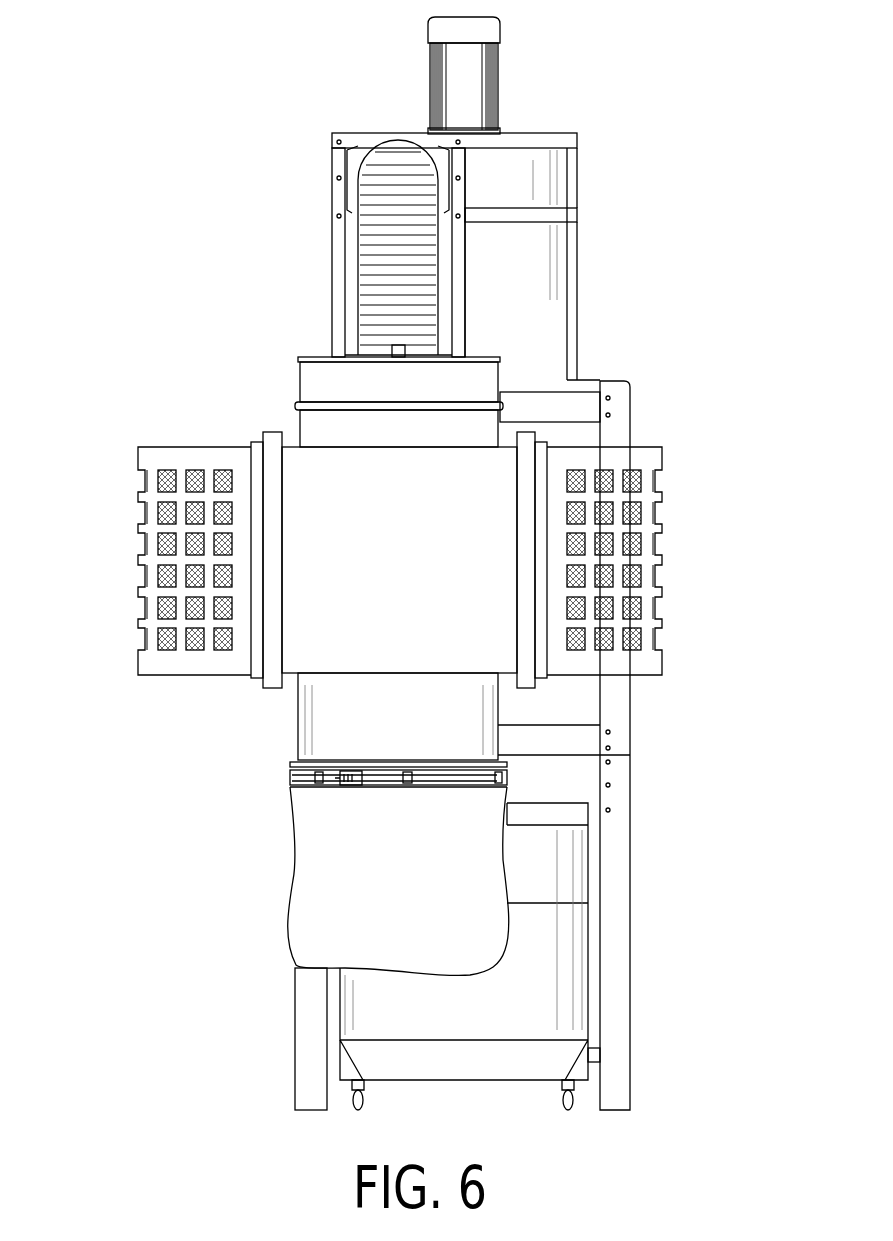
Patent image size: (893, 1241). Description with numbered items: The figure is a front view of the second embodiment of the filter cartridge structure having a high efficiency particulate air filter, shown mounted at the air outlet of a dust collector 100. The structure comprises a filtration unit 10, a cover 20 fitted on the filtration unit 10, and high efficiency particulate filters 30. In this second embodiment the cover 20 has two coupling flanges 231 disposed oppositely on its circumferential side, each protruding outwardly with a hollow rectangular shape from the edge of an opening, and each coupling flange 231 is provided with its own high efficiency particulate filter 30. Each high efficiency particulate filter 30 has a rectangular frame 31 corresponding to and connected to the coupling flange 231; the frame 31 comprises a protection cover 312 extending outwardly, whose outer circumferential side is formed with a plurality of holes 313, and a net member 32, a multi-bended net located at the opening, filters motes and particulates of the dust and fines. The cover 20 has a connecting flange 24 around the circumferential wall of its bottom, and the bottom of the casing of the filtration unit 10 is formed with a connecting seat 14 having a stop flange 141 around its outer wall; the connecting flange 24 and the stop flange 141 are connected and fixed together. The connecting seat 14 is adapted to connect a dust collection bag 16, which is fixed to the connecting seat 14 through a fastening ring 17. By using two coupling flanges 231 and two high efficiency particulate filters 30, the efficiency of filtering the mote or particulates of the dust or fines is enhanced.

The dust collector 100 is at (562, 130).
The cover 20 is at (488, 352).
The coupling flange 231 is at (500, 460).
The high efficiency particulate filter 30 is at (408, 491).
The frame 31 is at (258, 443).
The protection cover 312 is at (146, 460).
The holes 313 is at (138, 482).
The net member 32 is at (168, 545).
The connecting seat 14 is at (507, 765).
The connecting flange 24 is at (288, 763).
The stop flange 141 is at (288, 768).
The fastening ring 17 is at (288, 782).
The dust collection bag 16 is at (305, 933).
The filtration unit 10 is at (516, 790).